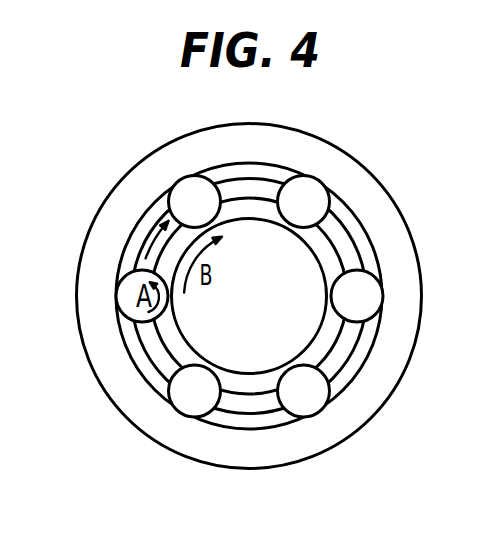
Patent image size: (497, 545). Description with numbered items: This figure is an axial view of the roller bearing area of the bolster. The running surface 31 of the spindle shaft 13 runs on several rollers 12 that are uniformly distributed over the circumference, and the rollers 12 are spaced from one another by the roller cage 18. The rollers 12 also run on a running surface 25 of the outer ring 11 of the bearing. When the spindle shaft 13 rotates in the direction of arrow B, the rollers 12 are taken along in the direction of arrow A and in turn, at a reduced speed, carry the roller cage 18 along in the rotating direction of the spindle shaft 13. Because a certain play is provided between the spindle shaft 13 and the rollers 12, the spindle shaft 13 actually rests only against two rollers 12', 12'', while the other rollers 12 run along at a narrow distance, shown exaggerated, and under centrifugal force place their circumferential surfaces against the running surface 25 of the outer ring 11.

The outer ring of the bearing 11 is at (393, 216).
The rollers 12 is at (313, 312).
The roller 12' is at (107, 332).
The roller 12'' is at (149, 169).
The spindle shaft 13 is at (288, 330).
The roller cage 18 is at (355, 332).
The running surface of the outer ring 25 is at (133, 232).
The running surface of the spindle shaft 31 is at (212, 370).